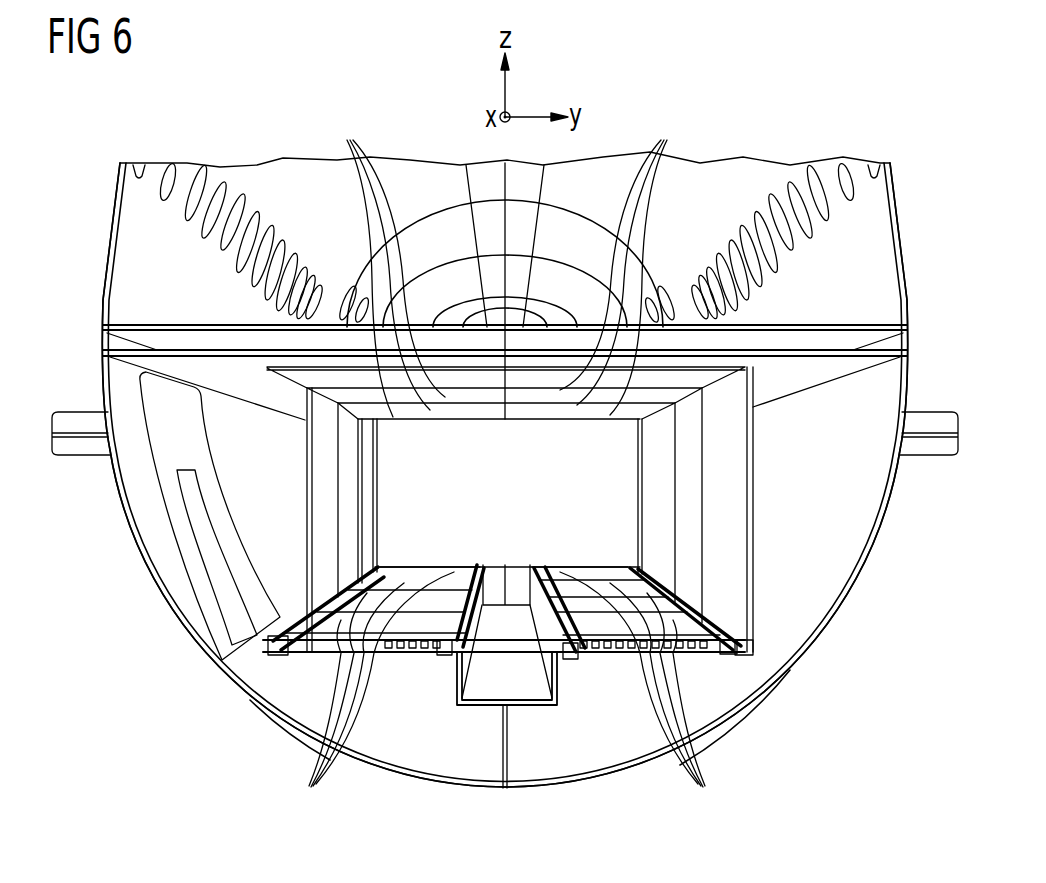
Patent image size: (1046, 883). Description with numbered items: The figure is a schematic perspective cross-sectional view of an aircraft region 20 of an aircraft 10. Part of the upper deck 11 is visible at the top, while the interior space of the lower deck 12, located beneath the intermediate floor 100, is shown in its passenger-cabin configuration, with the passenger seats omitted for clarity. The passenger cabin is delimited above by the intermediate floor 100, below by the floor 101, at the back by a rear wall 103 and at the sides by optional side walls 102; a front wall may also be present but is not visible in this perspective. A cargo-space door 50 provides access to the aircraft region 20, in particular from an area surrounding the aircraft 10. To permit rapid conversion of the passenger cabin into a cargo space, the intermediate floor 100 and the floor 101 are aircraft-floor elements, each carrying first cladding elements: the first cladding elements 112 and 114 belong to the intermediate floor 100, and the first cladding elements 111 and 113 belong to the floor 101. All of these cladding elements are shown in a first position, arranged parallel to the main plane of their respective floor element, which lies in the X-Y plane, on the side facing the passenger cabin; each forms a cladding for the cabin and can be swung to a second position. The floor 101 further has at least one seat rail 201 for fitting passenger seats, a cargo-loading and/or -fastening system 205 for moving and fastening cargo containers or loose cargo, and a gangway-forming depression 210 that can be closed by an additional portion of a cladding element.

The aircraft 10 is at (113, 211).
The upper deck 11 is at (95, 280).
The lower deck 12 is at (118, 500).
The aircraft region 20 is at (782, 610).
The cargo-space door 50 is at (178, 558).
The intermediate floor 100 is at (149, 362).
The floor 101 is at (697, 653).
The side walls 102 is at (307, 537).
The rear wall 103 is at (617, 482).
The first cladding element 111 is at (507, 686).
The first cladding element 112 is at (350, 140).
The first cladding element 113 is at (283, 715).
The first cladding element 114 is at (280, 255).
The seat rail 201 is at (273, 653).
The cargo-loading and/or -fastening system 205 is at (411, 653).
The gangway-forming depression 210 is at (497, 687).